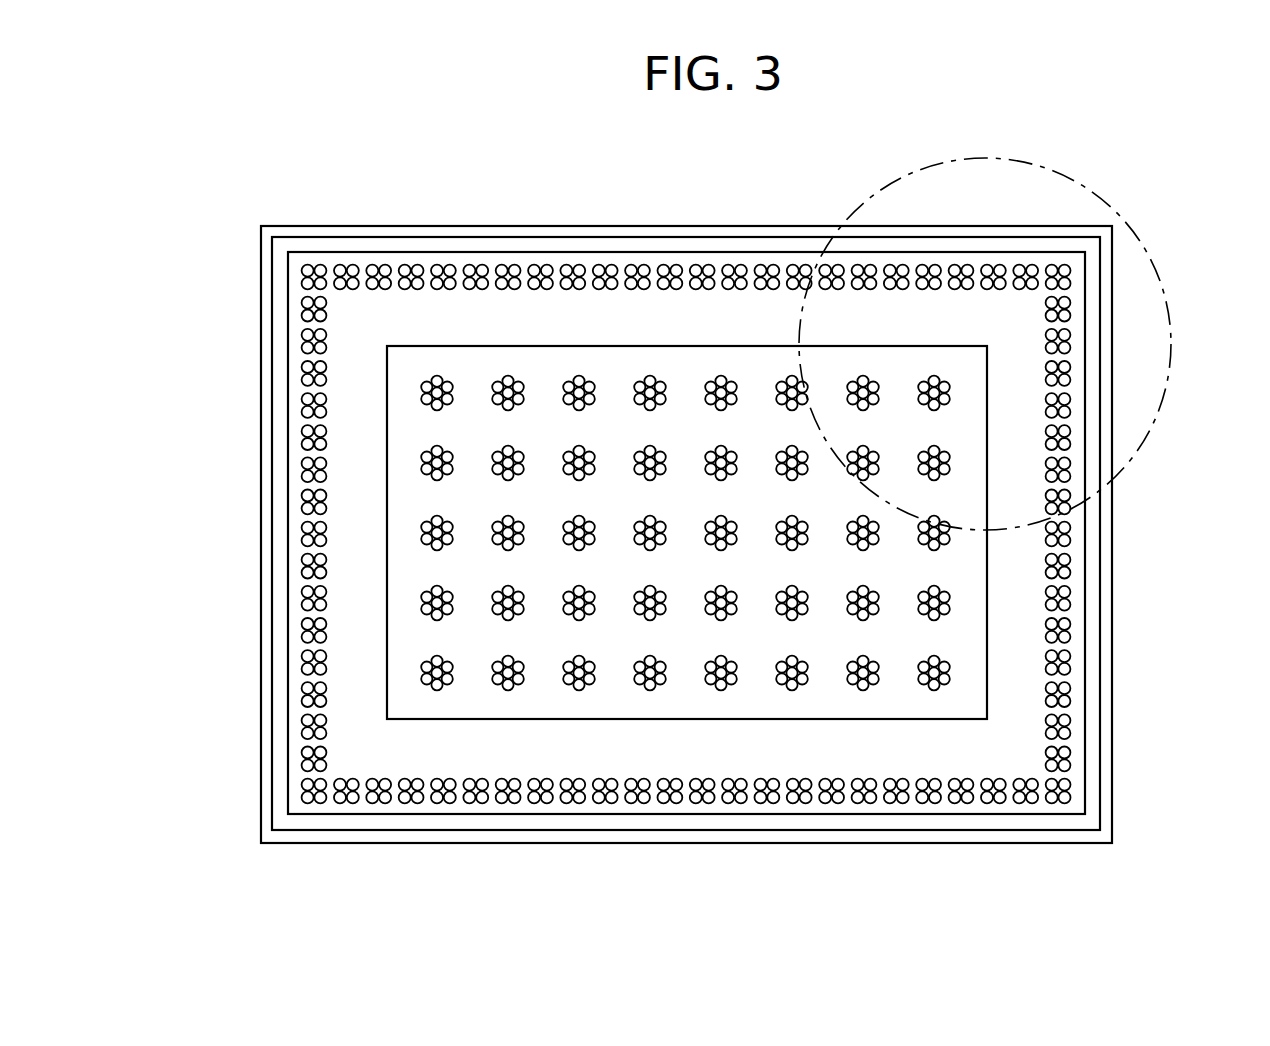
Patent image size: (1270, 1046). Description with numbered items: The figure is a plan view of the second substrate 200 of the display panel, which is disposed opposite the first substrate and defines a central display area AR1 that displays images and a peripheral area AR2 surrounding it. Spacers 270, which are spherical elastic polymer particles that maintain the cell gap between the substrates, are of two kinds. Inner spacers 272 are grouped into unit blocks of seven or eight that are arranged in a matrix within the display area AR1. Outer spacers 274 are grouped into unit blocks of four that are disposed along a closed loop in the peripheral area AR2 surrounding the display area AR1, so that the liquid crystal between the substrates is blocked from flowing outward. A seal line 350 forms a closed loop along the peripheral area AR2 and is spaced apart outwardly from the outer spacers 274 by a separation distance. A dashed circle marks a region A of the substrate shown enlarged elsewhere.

The second substrate 200 is at (223, 209).
The seal line 350 is at (337, 822).
The spacers 270 is at (686, 604).
The inner spacers 272 is at (721, 691).
The outer spacers 274 is at (668, 802).
The display area AR1 is at (964, 590).
The peripheral area AR2 is at (1003, 621).
The enlarged region A is at (1172, 345).